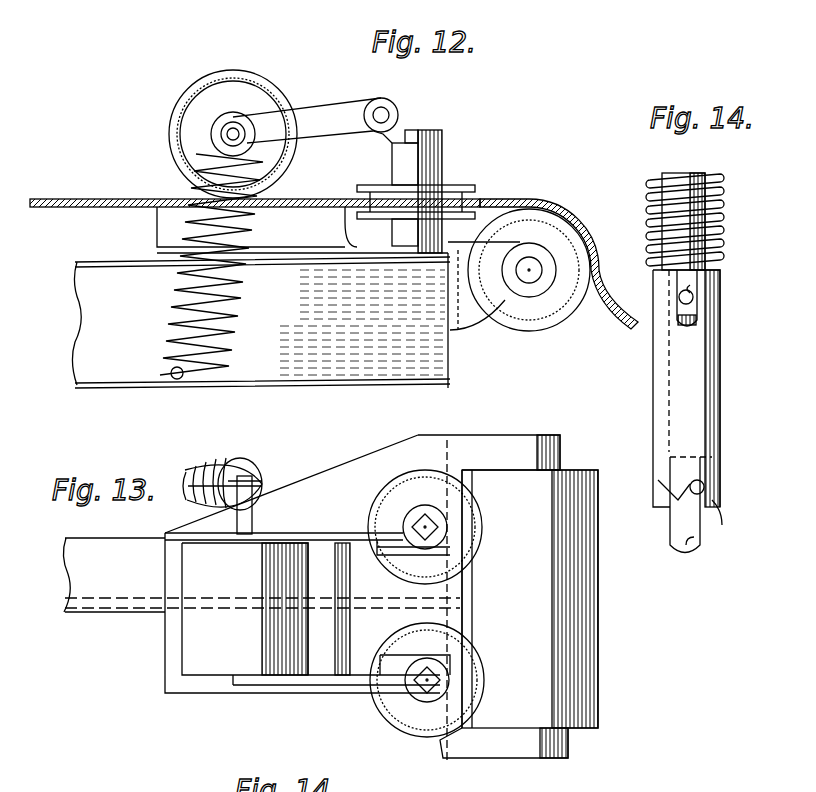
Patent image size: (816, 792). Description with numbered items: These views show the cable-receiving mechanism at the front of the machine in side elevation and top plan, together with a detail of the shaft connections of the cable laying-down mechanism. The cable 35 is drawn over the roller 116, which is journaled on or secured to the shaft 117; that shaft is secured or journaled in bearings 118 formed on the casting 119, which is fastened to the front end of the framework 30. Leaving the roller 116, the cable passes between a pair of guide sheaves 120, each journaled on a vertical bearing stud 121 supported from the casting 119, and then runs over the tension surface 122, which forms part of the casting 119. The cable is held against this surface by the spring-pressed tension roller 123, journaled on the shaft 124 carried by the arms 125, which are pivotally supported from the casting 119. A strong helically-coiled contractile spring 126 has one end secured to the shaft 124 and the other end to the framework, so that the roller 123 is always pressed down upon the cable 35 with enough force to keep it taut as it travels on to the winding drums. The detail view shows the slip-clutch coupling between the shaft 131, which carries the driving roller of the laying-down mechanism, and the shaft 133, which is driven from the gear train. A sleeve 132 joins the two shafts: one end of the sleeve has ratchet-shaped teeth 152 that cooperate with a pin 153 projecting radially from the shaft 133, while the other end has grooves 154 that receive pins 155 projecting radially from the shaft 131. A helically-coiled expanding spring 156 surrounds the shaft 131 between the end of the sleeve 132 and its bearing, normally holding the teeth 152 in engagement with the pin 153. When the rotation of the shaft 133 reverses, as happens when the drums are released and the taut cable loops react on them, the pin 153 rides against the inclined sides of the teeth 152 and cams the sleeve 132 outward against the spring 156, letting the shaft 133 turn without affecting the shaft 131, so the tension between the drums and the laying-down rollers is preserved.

In FIG. 12, the framework 30 is at (98, 262).
In FIG. 13, the framework 30 is at (105, 550).
In FIG. 12, the cable 35 is at (527, 199).
In FIG. 12, the roller 116 is at (578, 302).
In FIG. 13, the roller 116 is at (598, 462).
In FIG. 12, the shaft 117 is at (532, 276).
In FIG. 12, the bearings 118 is at (515, 282).
In FIG. 13, the bearings 118 is at (493, 452).
In FIG. 12, the casting 119 is at (375, 253).
In FIG. 13, the casting 119 is at (407, 600).
In FIG. 12, the guide sheaves 120 is at (443, 190).
In FIG. 13, the guide sheaves 120 is at (478, 540).
In FIG. 12, the vertical bearing studs 121 is at (410, 130).
In FIG. 13, the vertical bearing studs 121 is at (440, 527).
In FIG. 12, the tension surface 122 is at (302, 230).
In FIG. 13, the tension surface 122 is at (325, 650).
In FIG. 12, the tension roller 123 is at (195, 103).
In FIG. 13, the tension roller 123 is at (225, 656).
In FIG. 13, the shaft 124 is at (262, 484).
In FIG. 12, the arms 125 is at (320, 112).
In FIG. 13, the arms 125 is at (296, 533).
In FIG. 12, the helically-coiled contractile spring 126 is at (228, 312).
In FIG. 13, the helically-coiled contractile spring 126 is at (208, 466).
In FIG. 14, the shaft 131 is at (688, 206).
In FIG. 14, the sleeve 132 is at (662, 398).
In FIG. 14, the shaft 133 is at (682, 538).
In FIG. 14, the ratchet-shaped teeth 152 is at (712, 505).
In FIG. 14, the pin 153 is at (703, 485).
In FIG. 14, the grooves 154 is at (695, 282).
In FIG. 14, the pins 155 is at (692, 308).
In FIG. 14, the helically-coiled expanding spring 156 is at (655, 208).